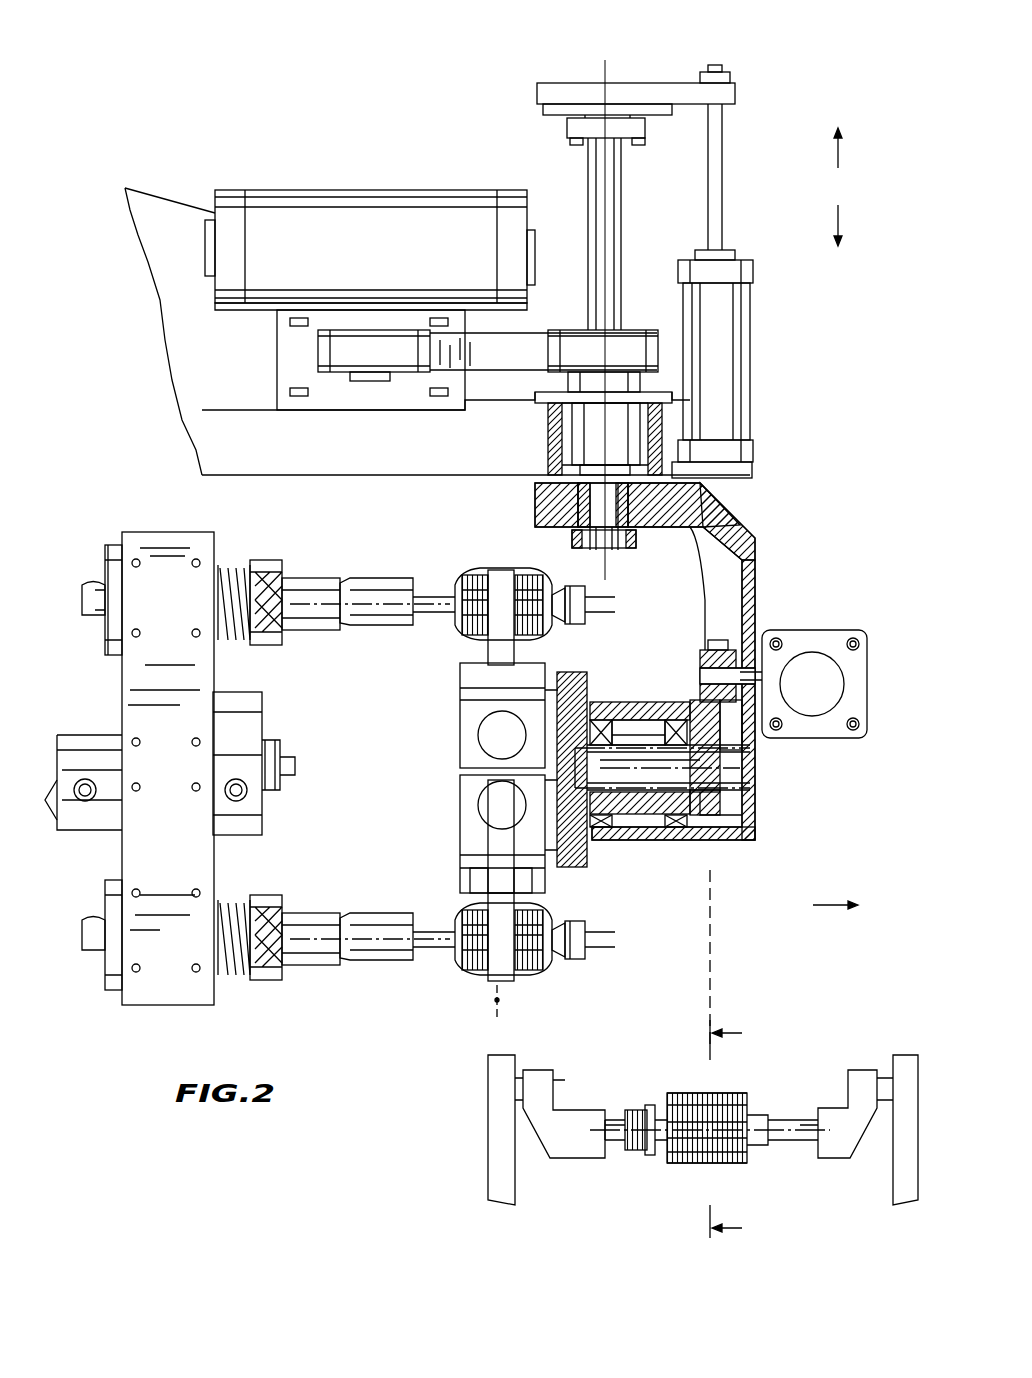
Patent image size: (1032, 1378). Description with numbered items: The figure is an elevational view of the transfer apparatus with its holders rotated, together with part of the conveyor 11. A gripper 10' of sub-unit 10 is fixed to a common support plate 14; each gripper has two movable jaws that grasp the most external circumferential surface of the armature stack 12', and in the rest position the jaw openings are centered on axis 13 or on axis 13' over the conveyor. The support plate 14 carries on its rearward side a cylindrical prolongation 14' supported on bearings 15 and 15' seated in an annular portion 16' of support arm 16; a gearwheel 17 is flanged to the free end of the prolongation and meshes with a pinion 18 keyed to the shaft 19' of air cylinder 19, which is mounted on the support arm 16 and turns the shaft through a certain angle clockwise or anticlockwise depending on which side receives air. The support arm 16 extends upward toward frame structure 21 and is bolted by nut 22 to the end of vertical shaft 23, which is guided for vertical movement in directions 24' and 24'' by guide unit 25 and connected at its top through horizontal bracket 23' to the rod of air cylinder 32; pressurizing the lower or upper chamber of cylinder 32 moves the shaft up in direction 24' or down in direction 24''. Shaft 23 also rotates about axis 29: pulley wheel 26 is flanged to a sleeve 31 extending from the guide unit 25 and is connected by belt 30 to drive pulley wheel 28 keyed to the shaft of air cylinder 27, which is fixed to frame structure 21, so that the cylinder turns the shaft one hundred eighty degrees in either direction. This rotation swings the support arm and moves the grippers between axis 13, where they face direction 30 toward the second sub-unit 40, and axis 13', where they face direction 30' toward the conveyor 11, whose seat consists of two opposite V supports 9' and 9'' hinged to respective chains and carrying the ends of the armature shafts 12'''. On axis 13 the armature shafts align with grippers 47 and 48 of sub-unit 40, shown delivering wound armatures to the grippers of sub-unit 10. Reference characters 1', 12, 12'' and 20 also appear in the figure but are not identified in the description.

The axis distance 1' is at (735, 1132).
The V support 9' is at (570, 1138).
The V support 9'' is at (846, 1137).
The sub-unit 10 is at (496, 899).
The gripper 10' is at (502, 617).
The conveyor 11 is at (812, 1042).
The rotor 12 is at (710, 1103).
The stack 12' is at (707, 1149).
The rotor shaft 12'' is at (728, 1096).
The shaft 12''' is at (608, 1163).
The axis 13 is at (463, 1015).
The axis 13' is at (734, 965).
The support plate 14 is at (533, 783).
The cylindrical prolongation 14' is at (638, 691).
The bearing 15 is at (668, 788).
The bearing 15' is at (639, 849).
The support arm 16 is at (663, 661).
The annular portion 16' is at (638, 689).
The gearwheel 17 is at (738, 808).
The pinion 18 is at (716, 640).
The air cylinder 19 is at (814, 664).
The shaft 19' is at (702, 639).
The shaft 20 is at (755, 775).
The frame structure 21 is at (350, 475).
The nut 22 is at (570, 540).
The vertical shaft 23 is at (630, 234).
The horizontal bracket 23' is at (636, 75).
The direction 24' is at (858, 149).
The direction 24'' is at (860, 224).
The guide unit 25 is at (590, 422).
The pulley wheel 26 is at (625, 330).
The air cylinder 27 is at (372, 215).
The drive pulley wheel 28 is at (320, 333).
The axis 29 is at (598, 70).
The belt 30 is at (508, 590).
The direction 30' is at (835, 890).
The sleeve 31 is at (565, 382).
The air cylinder 32 is at (735, 330).
The sub-unit 40 is at (78, 940).
The gripper 47 is at (306, 608).
The gripper 48 is at (305, 915).